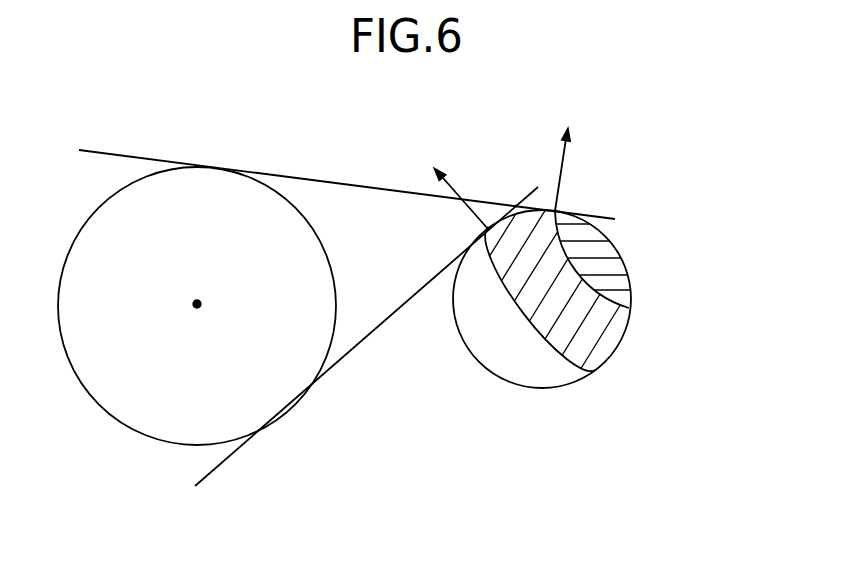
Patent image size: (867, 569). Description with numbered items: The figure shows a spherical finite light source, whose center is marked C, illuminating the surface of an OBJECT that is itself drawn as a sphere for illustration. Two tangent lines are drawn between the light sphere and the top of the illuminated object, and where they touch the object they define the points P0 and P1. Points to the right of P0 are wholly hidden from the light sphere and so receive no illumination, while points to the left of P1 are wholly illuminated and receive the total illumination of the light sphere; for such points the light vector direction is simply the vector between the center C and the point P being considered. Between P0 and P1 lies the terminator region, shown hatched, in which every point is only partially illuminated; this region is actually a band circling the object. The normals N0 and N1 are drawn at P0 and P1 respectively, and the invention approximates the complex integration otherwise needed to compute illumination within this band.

The center of the light sphere C is at (197, 306).
The object OBJECT is at (644, 304).
The normal at point P1 N1 is at (461, 182).
The normal at point P0 N0 is at (586, 169).
The point being considered P is at (515, 192).
The point P0 is at (580, 200).
The point P1 is at (460, 229).